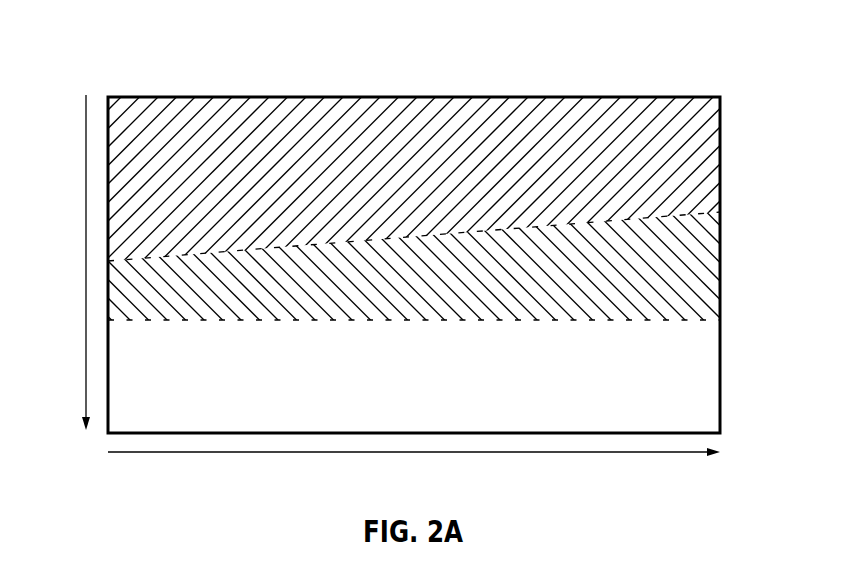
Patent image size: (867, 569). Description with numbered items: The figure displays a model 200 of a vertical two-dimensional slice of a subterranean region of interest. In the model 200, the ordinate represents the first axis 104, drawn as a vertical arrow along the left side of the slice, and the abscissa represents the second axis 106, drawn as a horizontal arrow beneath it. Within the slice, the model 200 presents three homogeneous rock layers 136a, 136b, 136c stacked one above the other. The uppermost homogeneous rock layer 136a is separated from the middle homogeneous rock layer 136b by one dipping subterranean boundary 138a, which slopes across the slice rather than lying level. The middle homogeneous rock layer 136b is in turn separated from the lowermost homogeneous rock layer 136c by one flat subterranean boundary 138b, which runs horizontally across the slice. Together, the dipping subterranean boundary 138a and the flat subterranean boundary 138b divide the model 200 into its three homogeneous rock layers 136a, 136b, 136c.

The model 200 is at (669, 31).
The first axis 104 is at (83, 252).
The second axis 106 is at (333, 453).
The homogeneous rock layer 136a is at (707, 140).
The dipping subterranean boundary 138a is at (712, 212).
The homogeneous rock layer 136b is at (708, 270).
The flat subterranean boundary 138b is at (713, 322).
The homogeneous rock layer 136c is at (708, 407).